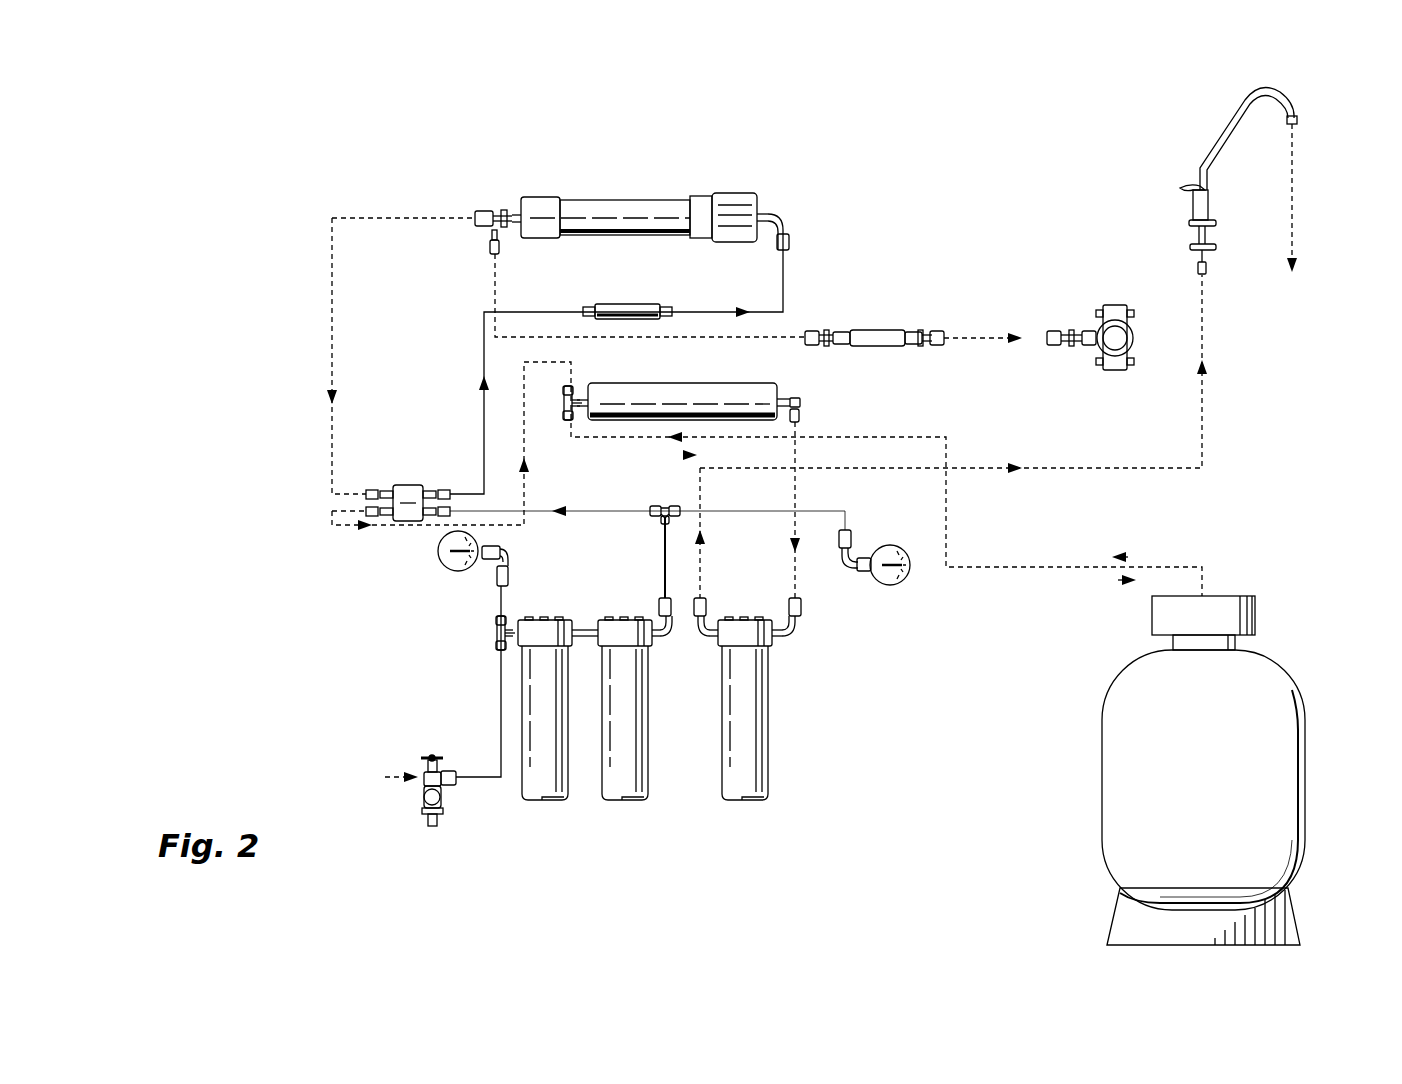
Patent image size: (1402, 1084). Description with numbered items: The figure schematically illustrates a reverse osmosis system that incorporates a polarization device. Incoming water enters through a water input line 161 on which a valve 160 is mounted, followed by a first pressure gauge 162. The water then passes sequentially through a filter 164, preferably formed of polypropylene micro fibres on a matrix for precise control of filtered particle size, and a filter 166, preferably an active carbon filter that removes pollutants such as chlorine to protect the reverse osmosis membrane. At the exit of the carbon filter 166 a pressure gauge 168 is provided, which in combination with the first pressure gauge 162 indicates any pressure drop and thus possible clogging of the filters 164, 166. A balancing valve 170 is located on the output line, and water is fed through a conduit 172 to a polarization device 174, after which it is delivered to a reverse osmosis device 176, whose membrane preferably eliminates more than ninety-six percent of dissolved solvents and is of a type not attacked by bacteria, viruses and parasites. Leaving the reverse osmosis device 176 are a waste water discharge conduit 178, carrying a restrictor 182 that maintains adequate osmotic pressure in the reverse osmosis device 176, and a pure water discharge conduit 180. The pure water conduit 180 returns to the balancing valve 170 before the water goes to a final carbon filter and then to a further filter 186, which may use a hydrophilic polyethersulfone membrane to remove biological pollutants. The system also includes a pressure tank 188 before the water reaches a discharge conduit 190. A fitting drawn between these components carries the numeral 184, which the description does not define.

The valve 160 is at (426, 787).
The water input line 161 is at (474, 780).
The first pressure gauge 162 is at (440, 565).
The filter 164 is at (540, 812).
The filter 166 is at (630, 812).
The pressure gauge 168 is at (878, 586).
The balancing valve 170 is at (408, 485).
The conduit 172 is at (330, 290).
The polarization device 174 is at (630, 303).
The reverse osmosis device 176 is at (668, 195).
The waste water discharge conduit 178 is at (492, 283).
The pure water discharge conduit 180 is at (412, 218).
The restrictor 182 is at (870, 330).
The post filter 184 is at (718, 383).
The filter 186 is at (750, 812).
The pressure tank 188 is at (1305, 716).
The discharge conduit 190 is at (1203, 427).